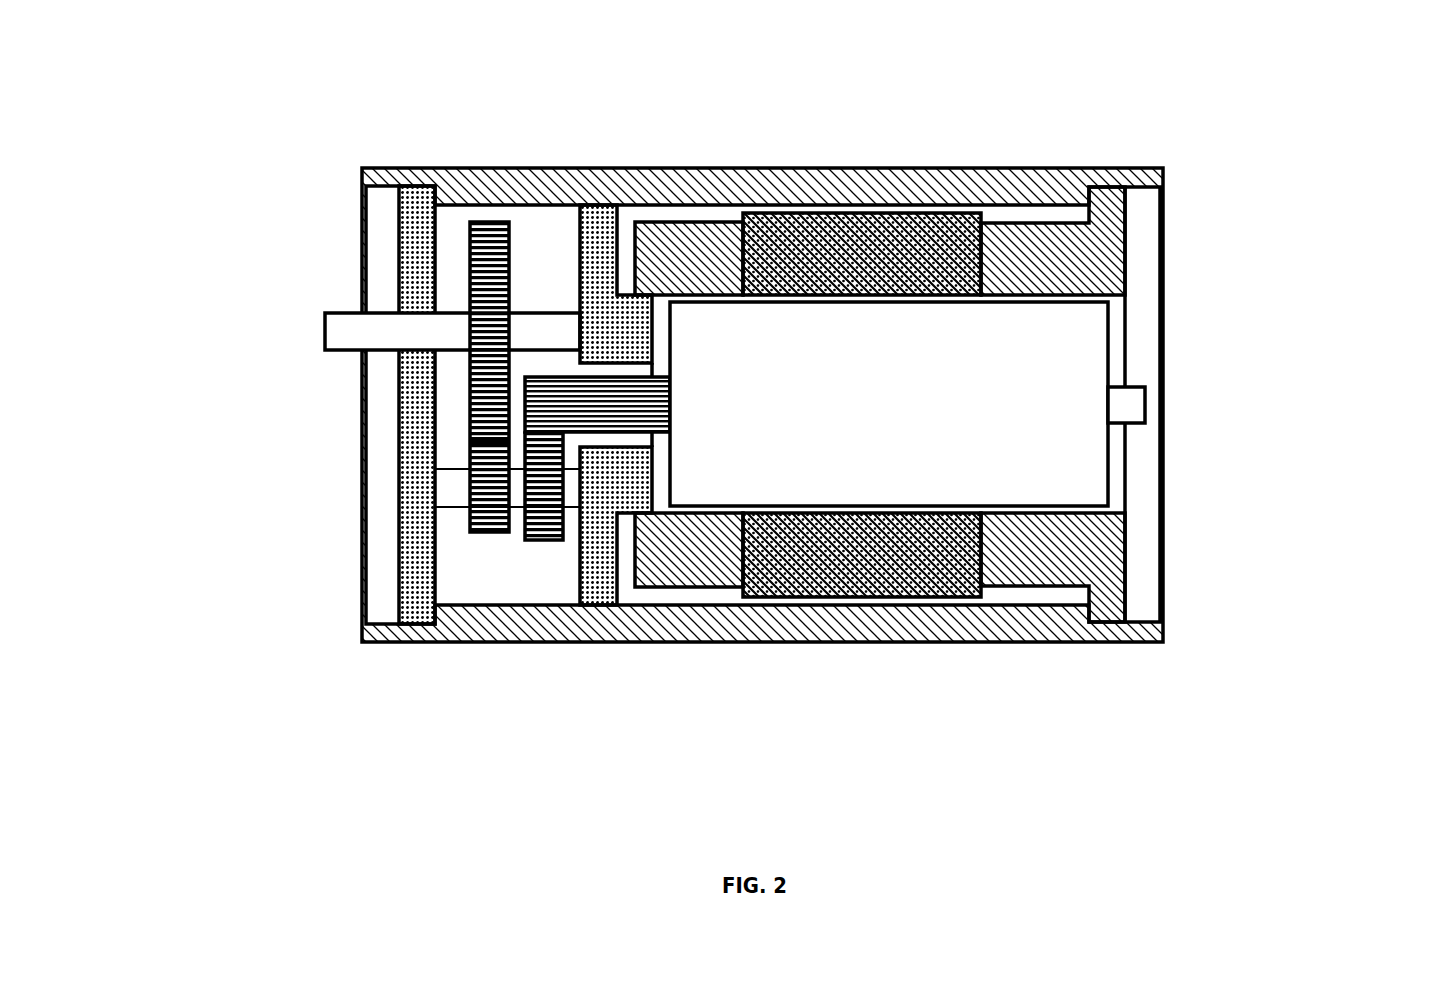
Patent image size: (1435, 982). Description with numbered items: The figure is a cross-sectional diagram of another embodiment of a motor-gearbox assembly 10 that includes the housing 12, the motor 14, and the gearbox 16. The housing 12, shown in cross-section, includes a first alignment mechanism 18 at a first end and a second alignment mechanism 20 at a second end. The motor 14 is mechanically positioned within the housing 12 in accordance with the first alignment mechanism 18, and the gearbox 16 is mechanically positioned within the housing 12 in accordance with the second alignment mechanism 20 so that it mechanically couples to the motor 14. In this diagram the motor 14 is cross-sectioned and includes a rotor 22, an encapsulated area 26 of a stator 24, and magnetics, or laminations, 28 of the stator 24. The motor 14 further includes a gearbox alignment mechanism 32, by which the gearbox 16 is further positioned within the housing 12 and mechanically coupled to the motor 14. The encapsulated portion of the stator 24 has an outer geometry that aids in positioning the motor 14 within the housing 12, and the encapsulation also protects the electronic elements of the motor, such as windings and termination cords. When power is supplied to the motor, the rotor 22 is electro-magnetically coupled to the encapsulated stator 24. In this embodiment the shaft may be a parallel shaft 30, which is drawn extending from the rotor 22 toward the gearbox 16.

The motor-gearbox assembly 10 is at (765, 423).
The housing 12 is at (762, 335).
The motor 14 is at (1020, 394).
The gearbox 16 is at (489, 446).
The first alignment mechanism 18 is at (1235, 624).
The second alignment mechanism 20 is at (280, 404).
The rotor 22 is at (907, 404).
The stator 24 is at (1020, 400).
The encapsulated area of stator 26 is at (880, 350).
The magnetics of stator 28 is at (946, 468).
The parallel shaft 30 is at (537, 276).
The gearbox alignment mechanism 32 is at (716, 489).